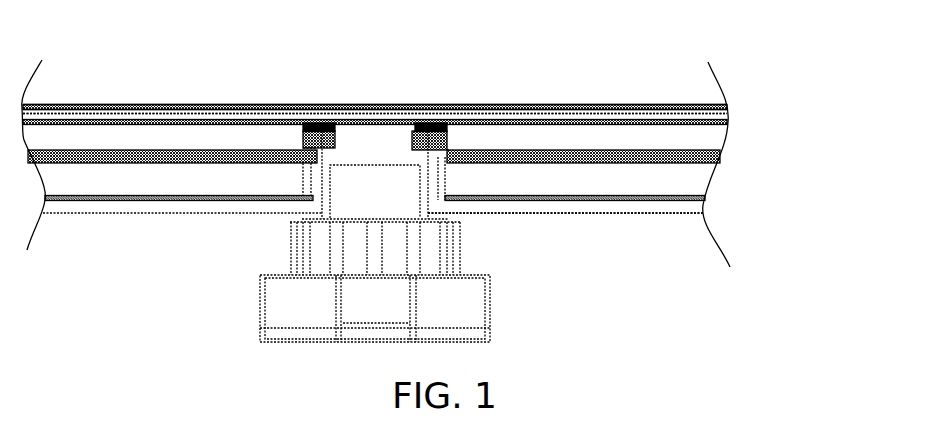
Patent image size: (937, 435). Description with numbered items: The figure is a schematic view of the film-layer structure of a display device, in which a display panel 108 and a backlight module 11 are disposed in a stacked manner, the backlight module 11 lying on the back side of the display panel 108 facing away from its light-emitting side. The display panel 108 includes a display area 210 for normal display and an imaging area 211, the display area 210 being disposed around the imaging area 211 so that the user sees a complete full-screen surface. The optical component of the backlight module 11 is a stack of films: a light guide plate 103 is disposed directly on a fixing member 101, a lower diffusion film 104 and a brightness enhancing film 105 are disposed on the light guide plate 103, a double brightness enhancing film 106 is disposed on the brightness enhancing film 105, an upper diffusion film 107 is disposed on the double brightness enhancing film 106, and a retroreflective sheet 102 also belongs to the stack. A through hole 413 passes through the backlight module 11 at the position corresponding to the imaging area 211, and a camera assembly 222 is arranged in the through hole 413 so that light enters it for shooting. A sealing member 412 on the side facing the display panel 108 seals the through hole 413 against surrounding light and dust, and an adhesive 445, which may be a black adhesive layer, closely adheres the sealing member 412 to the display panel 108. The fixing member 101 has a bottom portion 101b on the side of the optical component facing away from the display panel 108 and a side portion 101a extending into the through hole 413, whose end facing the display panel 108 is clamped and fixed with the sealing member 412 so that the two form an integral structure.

The fixing member 101 is at (700, 213).
The side portion 101a is at (433, 180).
The bottom portion 101b is at (580, 205).
The retroreflective sheet 102 is at (698, 203).
The light guide plate 103 is at (697, 175).
The lower diffusion film 104 is at (718, 162).
The brightness enhancing film 105 is at (720, 150).
The double brightness enhancing film 106 is at (722, 140).
The upper diffusion film 107 is at (727, 128).
The backlight module 11 is at (469, 98).
The display panel 108 is at (727, 105).
The display area 210 is at (180, 82).
The imaging area 211 is at (392, 80).
The sealing member 412 is at (450, 137).
The adhesive 445 is at (428, 125).
The through hole 413 is at (361, 125).
The camera assembly 222 is at (470, 292).